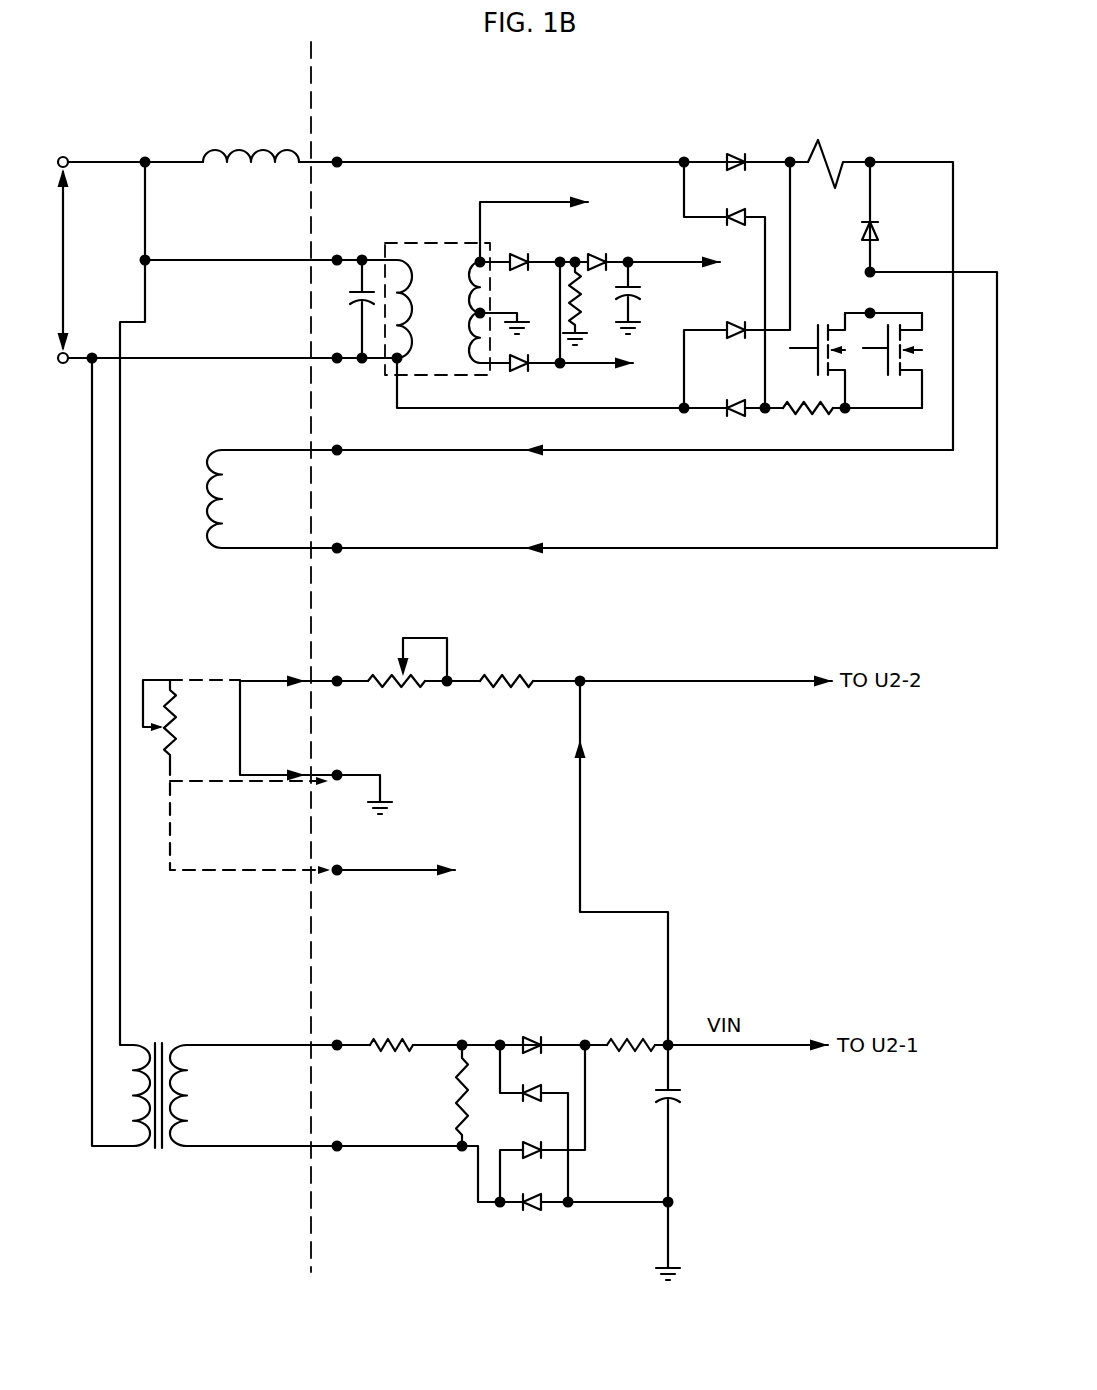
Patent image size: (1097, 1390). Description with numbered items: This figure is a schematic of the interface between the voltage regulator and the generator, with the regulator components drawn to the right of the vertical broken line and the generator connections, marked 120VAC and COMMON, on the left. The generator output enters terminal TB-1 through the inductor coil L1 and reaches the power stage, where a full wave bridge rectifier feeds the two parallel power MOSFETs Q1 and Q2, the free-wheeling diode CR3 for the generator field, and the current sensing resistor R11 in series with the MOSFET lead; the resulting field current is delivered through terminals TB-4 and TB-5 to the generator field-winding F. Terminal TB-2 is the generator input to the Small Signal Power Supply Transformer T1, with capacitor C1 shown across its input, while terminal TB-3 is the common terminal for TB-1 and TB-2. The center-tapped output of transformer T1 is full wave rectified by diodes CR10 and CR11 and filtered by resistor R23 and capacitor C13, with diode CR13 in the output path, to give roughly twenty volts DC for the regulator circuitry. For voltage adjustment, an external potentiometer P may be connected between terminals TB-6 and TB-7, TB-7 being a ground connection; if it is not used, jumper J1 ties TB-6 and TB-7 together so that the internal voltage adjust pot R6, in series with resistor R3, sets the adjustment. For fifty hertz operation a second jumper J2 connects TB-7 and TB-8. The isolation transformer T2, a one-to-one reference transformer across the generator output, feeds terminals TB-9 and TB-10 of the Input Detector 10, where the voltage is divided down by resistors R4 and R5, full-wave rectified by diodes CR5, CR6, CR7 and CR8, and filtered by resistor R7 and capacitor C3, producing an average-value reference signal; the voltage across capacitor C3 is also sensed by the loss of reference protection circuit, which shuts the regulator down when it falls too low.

The Input Detector 10 is at (417, 1227).
The inductor coil L1 is at (251, 137).
The capacitor C1 is at (344, 309).
The Small Signal Power Supply Transformer T1 is at (437, 309).
The rectifier diode CR10 is at (534, 246).
The diode CR13 is at (647, 246).
The filter resistor R23 is at (588, 303).
The filter capacitor C13 is at (652, 298).
The rectifier diode CR11 is at (556, 378).
The free-wheeling diode CR3 is at (894, 217).
The power MOSFET Q1 is at (817, 348).
The power MOSFET Q2 is at (892, 360).
The current sensing resistor R11 is at (808, 422).
The generator field-winding F is at (202, 499).
The external voltage adjusting potentiometer P is at (167, 721).
The jumper J1 is at (253, 728).
The jumper J2 is at (250, 818).
The voltage adjust pot R6 is at (407, 675).
The resistor R3 is at (506, 694).
The isolation transformer T2 is at (160, 1078).
The voltage divider resistor R5 is at (391, 1058).
The voltage divider resistor R4 is at (442, 1095).
The rectifier diode CR8 is at (527, 1030).
The rectifier diode CR6 is at (534, 1123).
The rectifier diode CR7 is at (542, 1123).
The rectifier diode CR5 is at (584, 1189).
The filter resistor R7 is at (631, 1029).
The capacitor C3 is at (686, 1162).
The terminal TB-1 is at (344, 143).
The terminal TB-2 is at (342, 242).
The common terminal TB-3 is at (337, 343).
The terminal TB-4 is at (339, 436).
The terminal TB-5 is at (339, 534).
The terminal TB-6 is at (337, 665).
The ground terminal TB-7 is at (337, 759).
The terminal TB-8 is at (337, 854).
The terminal TB-9 is at (337, 1029).
The terminal TB-10 is at (343, 1131).
The generator output 120VAC is at (94, 260).
The common COMMON is at (209, 343).